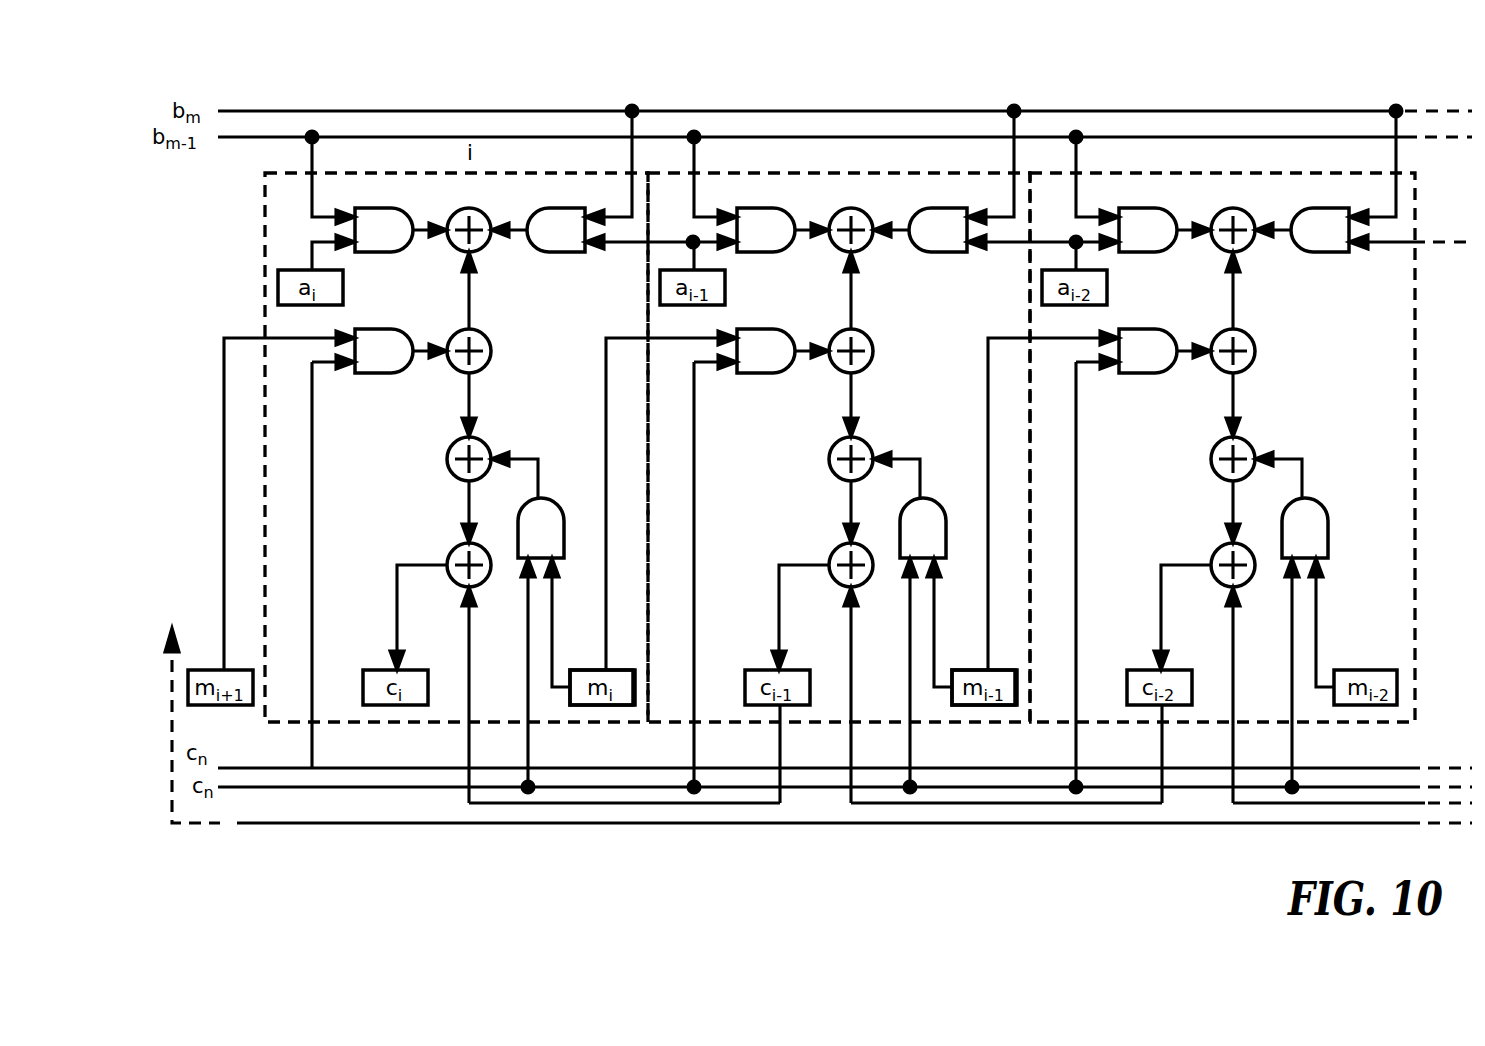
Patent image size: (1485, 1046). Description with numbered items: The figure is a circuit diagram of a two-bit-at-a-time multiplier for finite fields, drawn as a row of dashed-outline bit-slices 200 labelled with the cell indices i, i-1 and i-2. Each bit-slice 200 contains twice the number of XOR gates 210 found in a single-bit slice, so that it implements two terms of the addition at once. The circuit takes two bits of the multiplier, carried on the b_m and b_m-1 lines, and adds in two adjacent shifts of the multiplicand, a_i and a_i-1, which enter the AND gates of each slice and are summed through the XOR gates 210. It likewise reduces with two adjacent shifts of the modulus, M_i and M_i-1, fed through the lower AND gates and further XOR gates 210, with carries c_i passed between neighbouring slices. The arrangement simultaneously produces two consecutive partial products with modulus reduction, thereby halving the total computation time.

The bit-slice 200 is at (743, 173).
The XOR gate 210 is at (583, 852).
The cell i-1 index label 1 is at (839, 431).
The cell i-2 index label 2 is at (1222, 431).